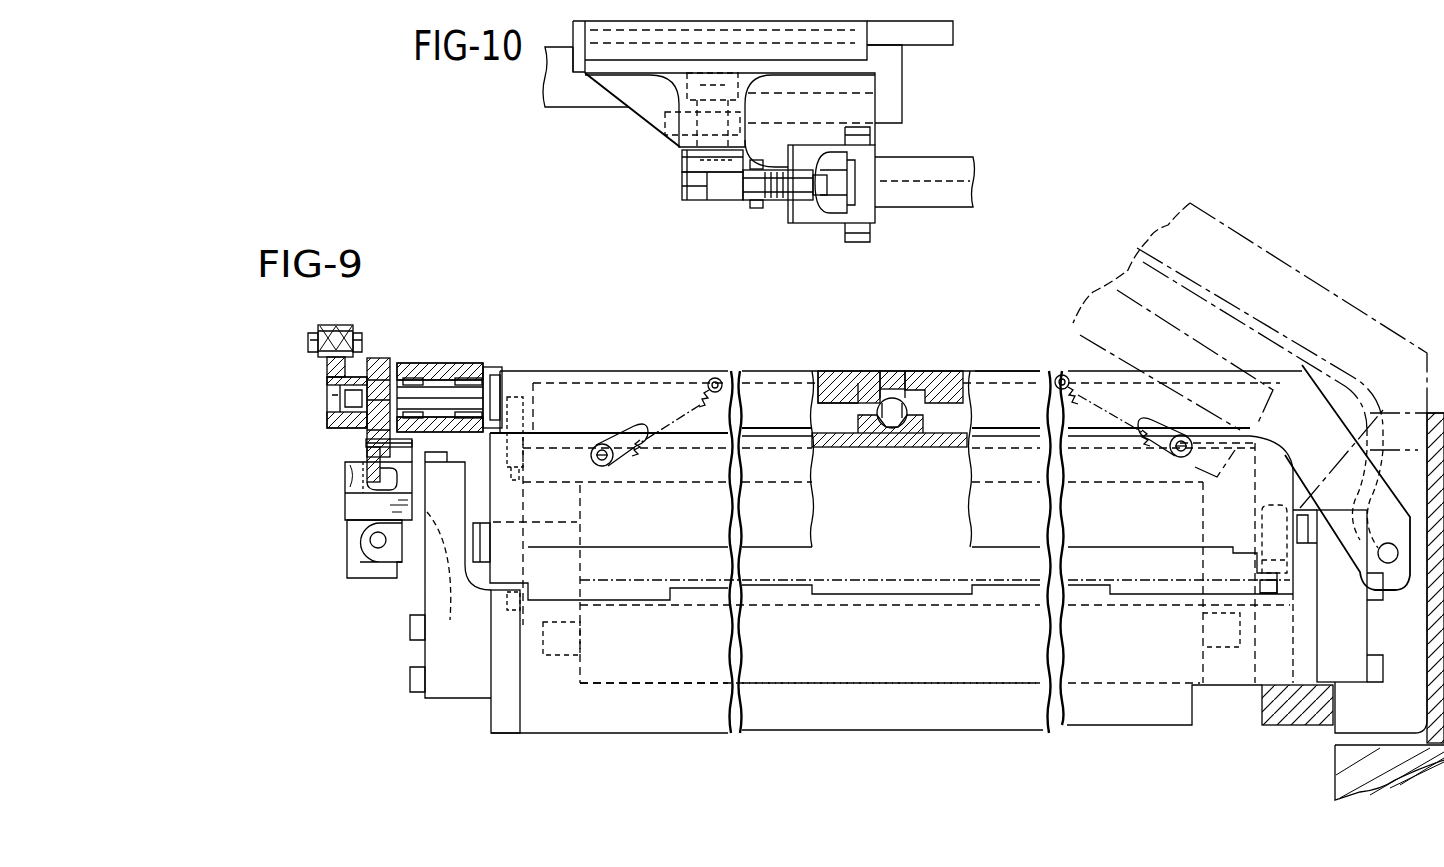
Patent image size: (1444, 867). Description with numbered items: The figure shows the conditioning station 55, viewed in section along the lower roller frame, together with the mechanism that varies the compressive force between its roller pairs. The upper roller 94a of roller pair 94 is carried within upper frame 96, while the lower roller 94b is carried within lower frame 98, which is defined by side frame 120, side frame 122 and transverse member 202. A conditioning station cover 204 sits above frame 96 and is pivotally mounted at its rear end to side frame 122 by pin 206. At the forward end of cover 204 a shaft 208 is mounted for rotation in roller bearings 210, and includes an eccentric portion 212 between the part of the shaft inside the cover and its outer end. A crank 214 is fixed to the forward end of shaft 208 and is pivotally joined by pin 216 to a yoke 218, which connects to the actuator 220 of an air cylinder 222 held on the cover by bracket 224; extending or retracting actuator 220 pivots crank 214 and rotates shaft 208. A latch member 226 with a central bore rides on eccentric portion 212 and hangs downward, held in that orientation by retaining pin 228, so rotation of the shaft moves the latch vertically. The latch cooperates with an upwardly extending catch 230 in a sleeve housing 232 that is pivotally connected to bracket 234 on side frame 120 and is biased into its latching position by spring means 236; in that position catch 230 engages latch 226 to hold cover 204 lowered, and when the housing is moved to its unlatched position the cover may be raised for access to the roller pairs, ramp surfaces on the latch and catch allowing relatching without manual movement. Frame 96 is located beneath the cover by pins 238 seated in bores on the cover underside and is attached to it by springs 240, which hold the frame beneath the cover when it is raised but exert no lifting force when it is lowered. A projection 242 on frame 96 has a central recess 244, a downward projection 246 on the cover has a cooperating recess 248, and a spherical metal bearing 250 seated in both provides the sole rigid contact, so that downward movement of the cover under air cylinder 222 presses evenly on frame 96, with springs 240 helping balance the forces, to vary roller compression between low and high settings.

In FIG. 9, the conditioning station 55 is at (993, 352).
In FIG. 9, the roller pair 94 is at (835, 683).
In FIG. 9, the roller 94a is at (803, 502).
In FIG. 9, the roller 94b is at (907, 680).
In FIG. 9, the upper frame 96 is at (553, 446).
In FIG. 9, the lower frame 98 is at (753, 710).
In FIG. 9, the side frame 120 is at (505, 723).
In FIG. 9, the side frame 122 is at (1345, 663).
In FIG. 9, the transverse member 202 is at (592, 724).
In FIG. 10, the conditioning station cover 204 is at (606, 75).
In FIG. 9, the conditioning station cover 204 is at (1265, 255).
In FIG. 9, the pin 206 is at (1388, 563).
In FIG. 10, the shaft 208 is at (670, 110).
In FIG. 9, the shaft 208 is at (438, 394).
In FIG. 9, the roller bearings 210 is at (408, 378).
In FIG. 10, the eccentric portion 212 is at (698, 165).
In FIG. 9, the eccentric portion 212 is at (378, 383).
In FIG. 10, the crank 214 is at (693, 188).
In FIG. 9, the crank 214 is at (333, 372).
In FIG. 9, the pin 216 is at (337, 341).
In FIG. 10, the yoke 218 is at (800, 197).
In FIG. 10, the actuator 220 is at (823, 195).
In FIG. 10, the air cylinder 222 is at (897, 195).
In FIG. 10, the bracket 224 is at (822, 223).
In FIG. 9, the latch member 226 is at (366, 435).
In FIG. 9, the retaining pin 228 is at (365, 445).
In FIG. 9, the catch 230 is at (385, 500).
In FIG. 9, the sleeve housing 232 is at (352, 563).
In FIG. 9, the bracket 234 is at (437, 560).
In FIG. 9, the spring means 236 is at (450, 575).
In FIG. 9, the pins 238 is at (517, 397).
In FIG. 9, the springs 240 is at (698, 396).
In FIG. 9, the projection 242 is at (927, 412).
In FIG. 9, the recess 244 is at (907, 433).
In FIG. 9, the downward projection 246 is at (865, 396).
In FIG. 9, the recess 248 is at (896, 395).
In FIG. 9, the spherical metal bearing 250 is at (877, 418).